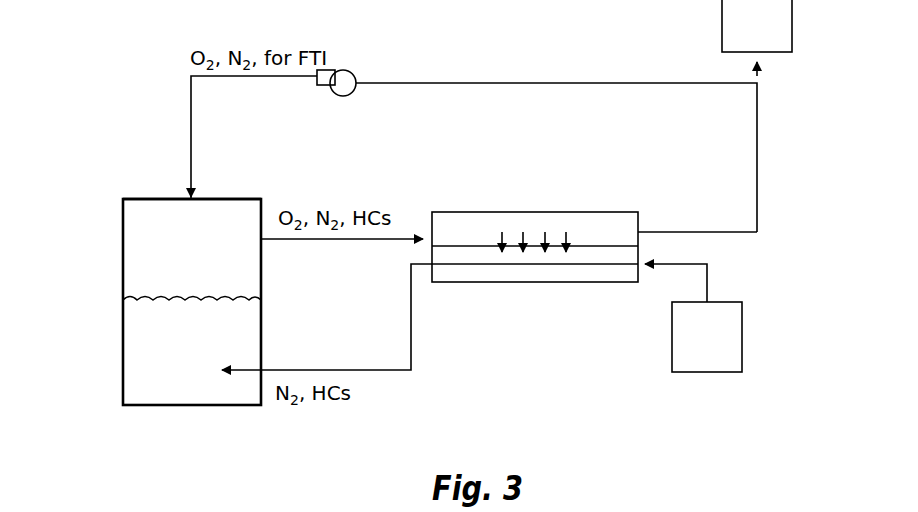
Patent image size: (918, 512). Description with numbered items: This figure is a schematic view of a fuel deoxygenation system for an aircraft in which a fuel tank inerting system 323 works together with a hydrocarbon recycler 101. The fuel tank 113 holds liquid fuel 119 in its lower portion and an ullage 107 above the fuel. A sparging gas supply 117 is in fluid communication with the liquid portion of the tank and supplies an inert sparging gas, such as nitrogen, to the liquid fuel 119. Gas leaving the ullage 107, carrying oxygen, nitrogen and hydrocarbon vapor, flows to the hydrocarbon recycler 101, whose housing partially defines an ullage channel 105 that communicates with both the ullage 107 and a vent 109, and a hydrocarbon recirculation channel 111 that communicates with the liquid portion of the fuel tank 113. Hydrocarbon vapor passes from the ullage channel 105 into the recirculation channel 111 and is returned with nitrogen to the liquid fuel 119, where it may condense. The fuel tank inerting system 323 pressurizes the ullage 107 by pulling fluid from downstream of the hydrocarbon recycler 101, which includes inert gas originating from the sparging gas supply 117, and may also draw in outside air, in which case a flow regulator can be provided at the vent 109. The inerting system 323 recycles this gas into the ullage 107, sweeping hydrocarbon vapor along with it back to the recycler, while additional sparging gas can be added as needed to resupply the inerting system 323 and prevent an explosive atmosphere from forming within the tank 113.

The hydrocarbon recycler 101 is at (513, 296).
The ullage channel 105 is at (553, 274).
The ullage 107 is at (172, 265).
The vent 109 is at (739, 31).
The hydrocarbon recirculation channel 111 is at (609, 220).
The fuel tank 113 is at (147, 198).
The sparging gas supply 117 is at (689, 351).
The liquid fuel 119 is at (172, 350).
The fuel tank inerting system 323 is at (345, 96).